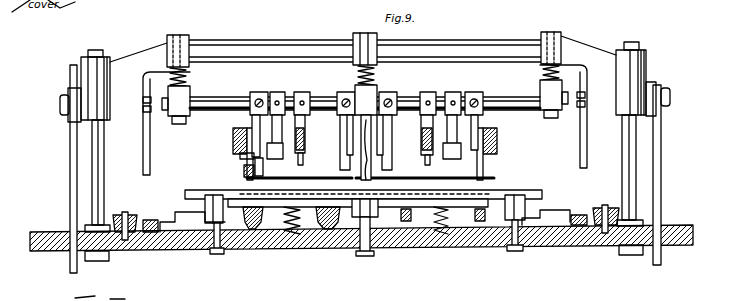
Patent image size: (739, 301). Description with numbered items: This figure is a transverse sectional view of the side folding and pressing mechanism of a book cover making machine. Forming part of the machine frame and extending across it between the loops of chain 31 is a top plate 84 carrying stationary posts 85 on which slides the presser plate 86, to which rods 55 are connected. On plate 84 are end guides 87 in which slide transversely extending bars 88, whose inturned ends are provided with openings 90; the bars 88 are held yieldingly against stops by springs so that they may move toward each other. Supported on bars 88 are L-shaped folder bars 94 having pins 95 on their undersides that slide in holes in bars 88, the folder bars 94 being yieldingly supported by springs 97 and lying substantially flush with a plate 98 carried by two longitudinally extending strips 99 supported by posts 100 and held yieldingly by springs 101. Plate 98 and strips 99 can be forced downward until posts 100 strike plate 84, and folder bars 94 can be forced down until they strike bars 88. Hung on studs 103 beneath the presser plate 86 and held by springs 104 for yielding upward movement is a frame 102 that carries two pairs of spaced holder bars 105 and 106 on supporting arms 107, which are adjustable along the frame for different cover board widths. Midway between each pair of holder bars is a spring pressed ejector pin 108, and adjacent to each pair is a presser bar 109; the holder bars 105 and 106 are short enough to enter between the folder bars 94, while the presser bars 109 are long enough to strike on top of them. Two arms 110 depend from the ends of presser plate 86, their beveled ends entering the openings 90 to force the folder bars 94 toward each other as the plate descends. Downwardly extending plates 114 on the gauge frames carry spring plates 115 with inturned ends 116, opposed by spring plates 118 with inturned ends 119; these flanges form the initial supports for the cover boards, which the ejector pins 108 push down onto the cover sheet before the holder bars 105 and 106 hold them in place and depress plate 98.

The chain 31 is at (451, 216).
The rod 55 is at (70, 150).
The top plate 84 is at (40, 232).
The stationary post 85 is at (640, 131).
The presser plate 86 is at (282, 46).
The end guide 87 is at (121, 214).
The transversely extending bar 88 is at (167, 215).
The opening 90 is at (148, 220).
The L-shaped folder bar 94 is at (387, 205).
The pin 95 is at (252, 232).
The spring 97 is at (328, 230).
The plate 98 is at (488, 180).
The longitudinally extending strip 99 is at (535, 190).
The post 100 is at (212, 200).
The spring 101 is at (290, 236).
The frame 102 is at (182, 96).
The stud 103 is at (189, 36).
The spring 104 is at (545, 56).
The holder bar 105 is at (267, 167).
The holder bar 106 is at (389, 150).
The supporting arm 107 is at (252, 122).
The spring pressed ejector pin 108 is at (300, 160).
The presser bar 109 is at (303, 132).
The arm 110 is at (150, 148).
The downwardly extending plate 114 is at (244, 172).
The spring plate 115 is at (246, 160).
The inturned end 116 is at (276, 174).
The spring plate 118 is at (367, 106).
The inturned end 119 is at (372, 180).